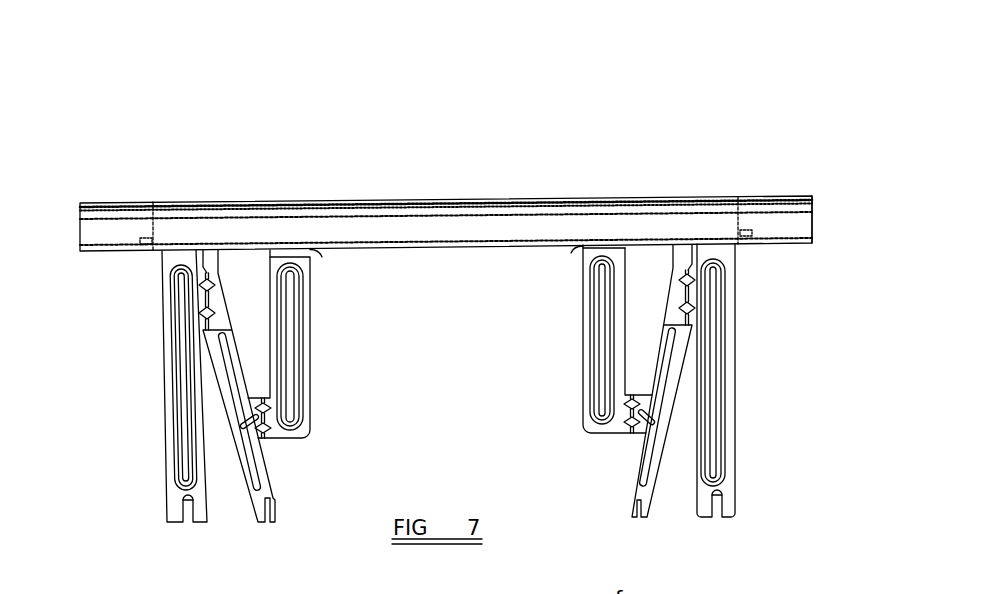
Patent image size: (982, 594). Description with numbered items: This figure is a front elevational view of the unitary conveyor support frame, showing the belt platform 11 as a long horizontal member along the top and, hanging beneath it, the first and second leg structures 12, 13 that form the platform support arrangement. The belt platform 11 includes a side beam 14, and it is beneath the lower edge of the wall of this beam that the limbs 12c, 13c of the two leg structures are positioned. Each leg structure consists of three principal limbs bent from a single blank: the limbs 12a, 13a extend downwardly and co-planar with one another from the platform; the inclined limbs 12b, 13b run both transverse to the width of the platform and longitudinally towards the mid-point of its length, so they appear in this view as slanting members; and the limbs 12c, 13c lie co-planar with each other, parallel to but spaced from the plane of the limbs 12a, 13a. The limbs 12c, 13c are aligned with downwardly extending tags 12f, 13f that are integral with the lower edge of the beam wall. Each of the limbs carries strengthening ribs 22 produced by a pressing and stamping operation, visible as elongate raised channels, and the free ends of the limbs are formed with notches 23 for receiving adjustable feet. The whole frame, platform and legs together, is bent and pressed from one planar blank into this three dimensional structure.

The belt platform 11 is at (466, 194).
The first side beam 14 is at (787, 218).
The first leg structure 12 is at (239, 387).
The limb of first leg structure 12a is at (162, 302).
The inclined limb of first leg structure 12b is at (274, 495).
The limb of first leg structure 12c is at (311, 290).
The tag 12f is at (311, 249).
The second leg structure 13 is at (656, 410).
The limb of second leg structure 13a is at (735, 438).
The inclined limb of second leg structure 13b is at (658, 423).
The limb of second leg structure 13c is at (583, 332).
The tag 13f is at (524, 269).
The strengthening ribs 22 is at (183, 402).
The notches 23 is at (188, 501).